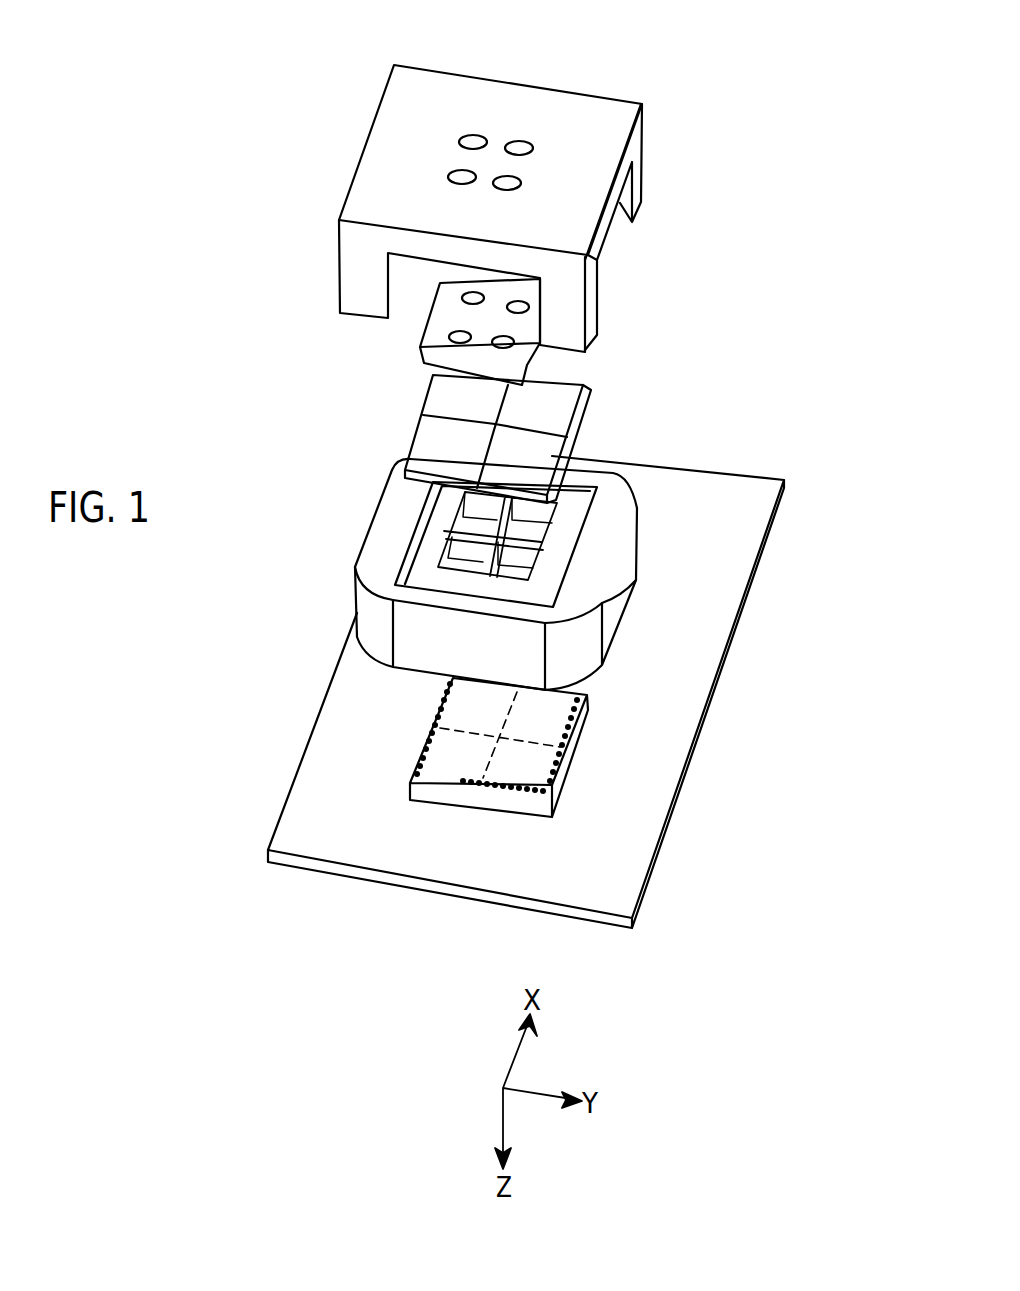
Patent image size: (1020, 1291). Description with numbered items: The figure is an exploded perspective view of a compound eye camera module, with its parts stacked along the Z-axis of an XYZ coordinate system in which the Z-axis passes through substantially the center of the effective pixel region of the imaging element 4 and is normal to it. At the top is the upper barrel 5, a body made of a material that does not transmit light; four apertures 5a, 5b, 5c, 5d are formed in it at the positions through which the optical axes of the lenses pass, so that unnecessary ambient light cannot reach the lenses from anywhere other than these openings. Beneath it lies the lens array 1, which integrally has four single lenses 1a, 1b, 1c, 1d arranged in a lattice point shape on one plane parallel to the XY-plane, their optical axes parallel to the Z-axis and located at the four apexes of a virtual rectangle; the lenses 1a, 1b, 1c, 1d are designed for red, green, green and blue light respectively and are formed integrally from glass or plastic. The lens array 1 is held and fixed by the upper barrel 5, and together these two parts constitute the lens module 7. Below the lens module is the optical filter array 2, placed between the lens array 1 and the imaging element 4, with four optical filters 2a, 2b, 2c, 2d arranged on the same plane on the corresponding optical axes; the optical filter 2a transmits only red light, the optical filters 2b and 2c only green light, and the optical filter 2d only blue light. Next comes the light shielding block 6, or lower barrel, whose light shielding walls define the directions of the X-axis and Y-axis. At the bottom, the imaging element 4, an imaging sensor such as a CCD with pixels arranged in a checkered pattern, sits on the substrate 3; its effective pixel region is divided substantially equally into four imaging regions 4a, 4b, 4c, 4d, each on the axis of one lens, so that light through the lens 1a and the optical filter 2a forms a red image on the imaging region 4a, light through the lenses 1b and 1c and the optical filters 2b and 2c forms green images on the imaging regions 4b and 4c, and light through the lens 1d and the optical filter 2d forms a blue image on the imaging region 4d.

The lens array 1 is at (461, 311).
The lens 1a is at (461, 298).
The lens 1b is at (530, 306).
The lens 1c is at (449, 337).
The lens 1d is at (515, 342).
The optical filter array 2 is at (460, 442).
The optical filter 2a is at (442, 392).
The optical filter 2b is at (565, 398).
The optical filter 2c is at (432, 445).
The optical filter 2d is at (555, 456).
The substrate 3 is at (276, 826).
The imaging element 4 is at (507, 749).
The imaging region 4a is at (462, 710).
The imaging region 4b is at (567, 710).
The imaging region 4c is at (446, 750).
The imaging region 4d is at (547, 768).
The upper barrel 5 is at (459, 184).
The aperture 5a is at (478, 133).
The aperture 5b is at (522, 140).
The aperture 5c is at (447, 175).
The aperture 5d is at (521, 184).
The light shielding block 6 is at (358, 547).
The lens module 7 is at (432, 207).